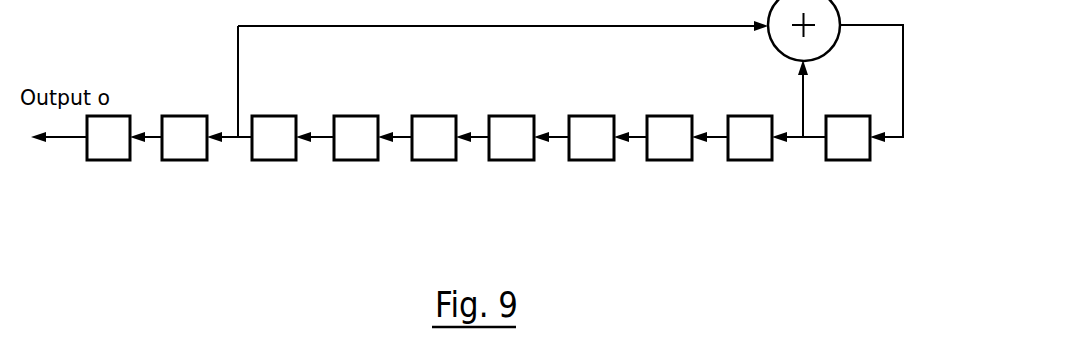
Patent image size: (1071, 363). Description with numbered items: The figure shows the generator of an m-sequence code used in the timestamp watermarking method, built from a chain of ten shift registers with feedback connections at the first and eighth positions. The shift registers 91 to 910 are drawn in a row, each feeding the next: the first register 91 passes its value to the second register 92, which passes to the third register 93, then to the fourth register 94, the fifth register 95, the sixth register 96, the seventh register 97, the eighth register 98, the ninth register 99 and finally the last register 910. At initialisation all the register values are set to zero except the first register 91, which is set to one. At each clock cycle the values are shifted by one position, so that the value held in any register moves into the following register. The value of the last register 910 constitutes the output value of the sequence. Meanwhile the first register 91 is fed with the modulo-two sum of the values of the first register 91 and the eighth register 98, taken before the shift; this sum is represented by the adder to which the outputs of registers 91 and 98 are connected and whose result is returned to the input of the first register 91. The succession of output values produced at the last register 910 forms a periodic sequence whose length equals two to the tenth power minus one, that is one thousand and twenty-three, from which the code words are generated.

The last register 910 is at (108, 160).
The shift register 99 is at (184, 160).
The eighth register 98 is at (274, 160).
The shift register 97 is at (356, 160).
The shift register 96 is at (434, 160).
The shift register 95 is at (512, 160).
The shift register 94 is at (592, 160).
The shift register 93 is at (670, 160).
The shift register 92 is at (750, 160).
The first register 91 is at (848, 160).